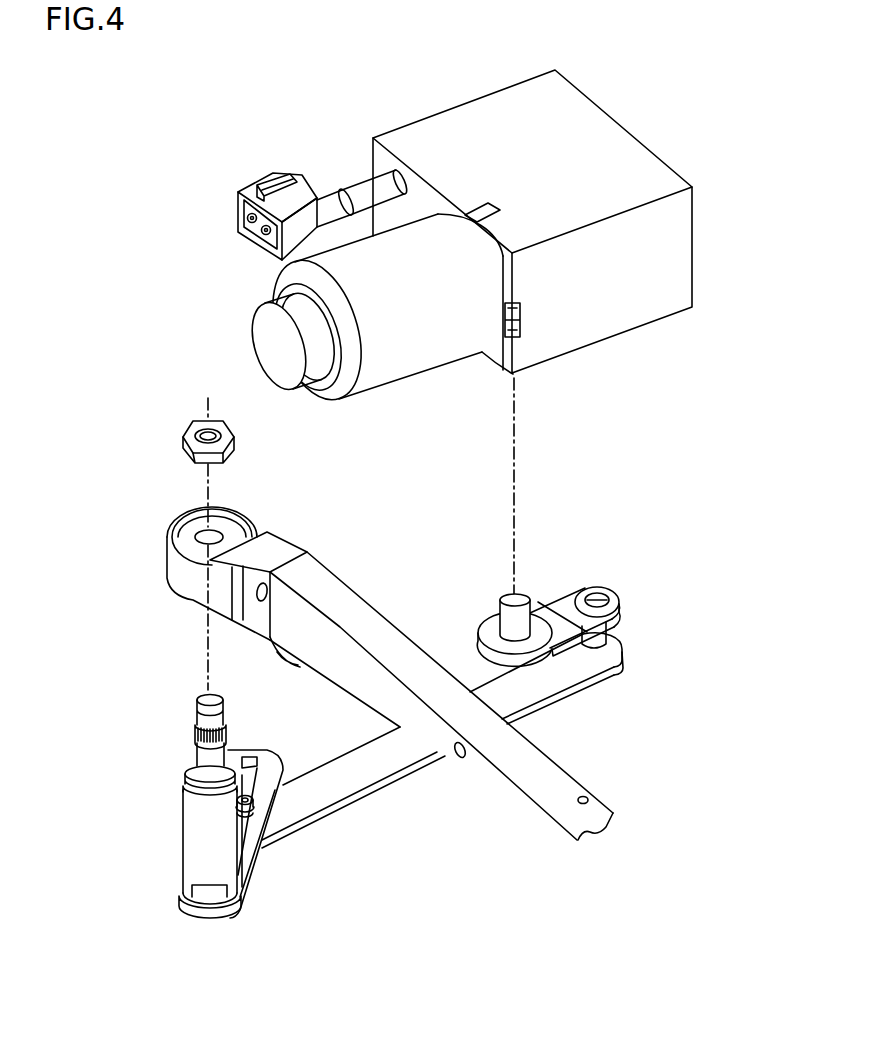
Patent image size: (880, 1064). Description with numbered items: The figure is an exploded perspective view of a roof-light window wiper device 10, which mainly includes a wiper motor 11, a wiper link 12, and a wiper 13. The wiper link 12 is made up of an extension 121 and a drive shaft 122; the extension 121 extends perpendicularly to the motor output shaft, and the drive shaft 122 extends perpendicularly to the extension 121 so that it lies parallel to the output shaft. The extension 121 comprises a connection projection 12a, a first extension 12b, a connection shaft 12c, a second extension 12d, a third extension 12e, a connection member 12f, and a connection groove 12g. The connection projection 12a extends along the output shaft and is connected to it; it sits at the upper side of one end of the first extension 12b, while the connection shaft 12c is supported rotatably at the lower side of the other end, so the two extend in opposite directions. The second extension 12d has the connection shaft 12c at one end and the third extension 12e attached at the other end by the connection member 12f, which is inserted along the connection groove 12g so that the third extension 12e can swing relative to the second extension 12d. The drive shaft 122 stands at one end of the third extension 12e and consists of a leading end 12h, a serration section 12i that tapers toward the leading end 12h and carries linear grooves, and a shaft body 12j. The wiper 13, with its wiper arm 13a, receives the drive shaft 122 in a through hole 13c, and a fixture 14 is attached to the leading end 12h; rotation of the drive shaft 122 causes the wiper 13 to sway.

The roof-light window wiper device 10 is at (639, 85).
The wiper motor 11 is at (668, 256).
The wiper link 12 is at (121, 786).
The connection projection 12a is at (510, 598).
The first extension 12b is at (548, 628).
The connection shaft 12c is at (618, 642).
The second extension 12d is at (537, 675).
The third extension 12e is at (246, 862).
The connection member 12f is at (258, 800).
The connection groove 12g is at (244, 757).
The leading end 12h is at (200, 694).
The serration section 12i is at (197, 729).
The shaft body 12j is at (183, 888).
The extension 121 is at (235, 787).
The drive shaft 122 is at (203, 838).
The wiper 13 is at (487, 763).
The wiper arm 13a is at (532, 793).
The through hole 13c is at (198, 526).
The fixture 14 is at (183, 441).